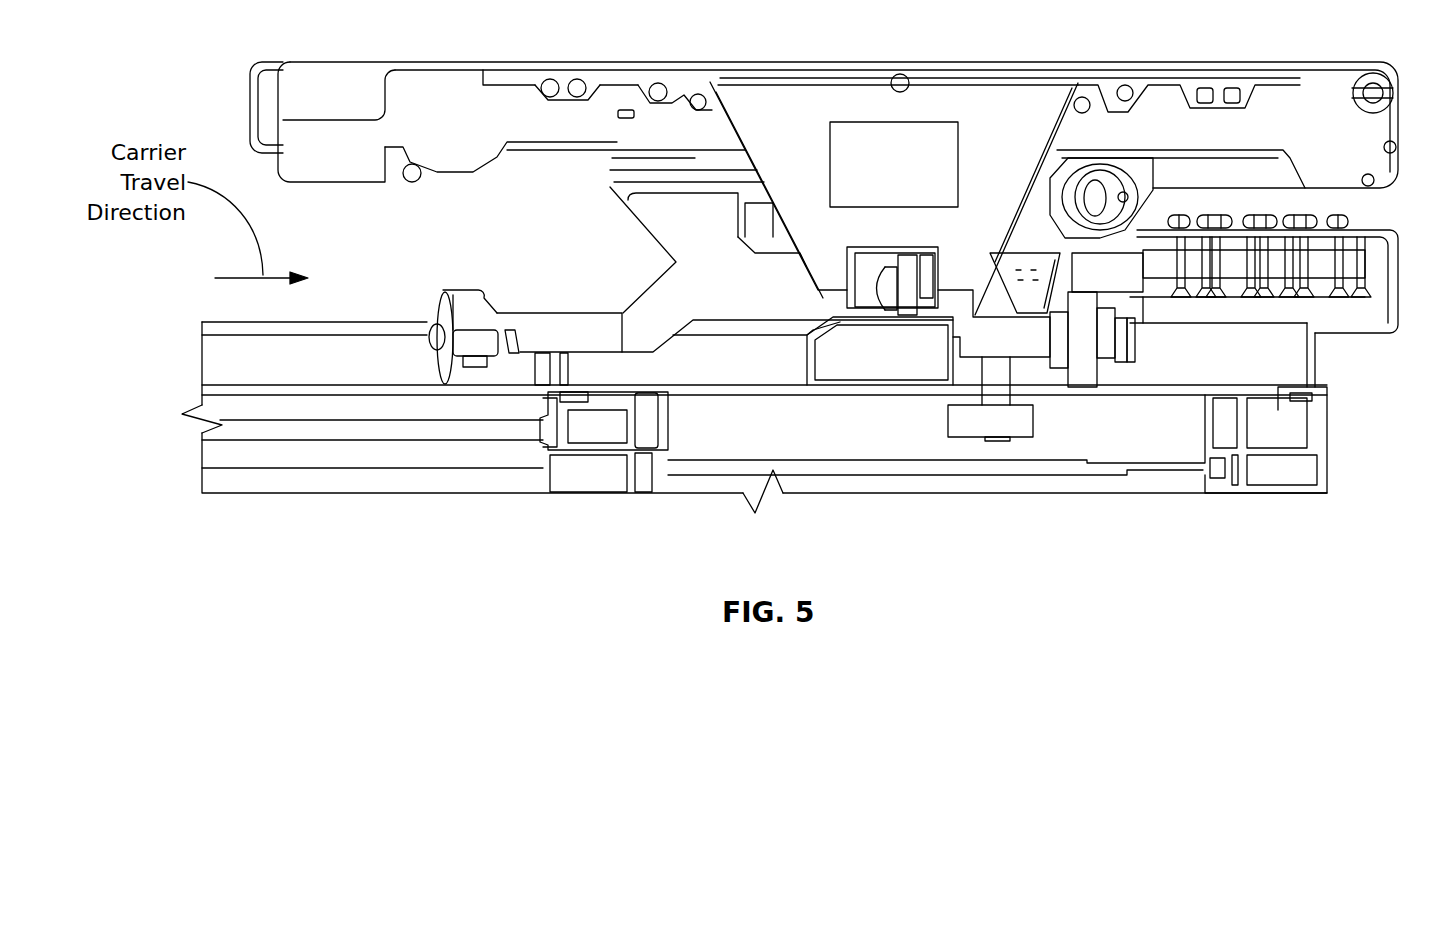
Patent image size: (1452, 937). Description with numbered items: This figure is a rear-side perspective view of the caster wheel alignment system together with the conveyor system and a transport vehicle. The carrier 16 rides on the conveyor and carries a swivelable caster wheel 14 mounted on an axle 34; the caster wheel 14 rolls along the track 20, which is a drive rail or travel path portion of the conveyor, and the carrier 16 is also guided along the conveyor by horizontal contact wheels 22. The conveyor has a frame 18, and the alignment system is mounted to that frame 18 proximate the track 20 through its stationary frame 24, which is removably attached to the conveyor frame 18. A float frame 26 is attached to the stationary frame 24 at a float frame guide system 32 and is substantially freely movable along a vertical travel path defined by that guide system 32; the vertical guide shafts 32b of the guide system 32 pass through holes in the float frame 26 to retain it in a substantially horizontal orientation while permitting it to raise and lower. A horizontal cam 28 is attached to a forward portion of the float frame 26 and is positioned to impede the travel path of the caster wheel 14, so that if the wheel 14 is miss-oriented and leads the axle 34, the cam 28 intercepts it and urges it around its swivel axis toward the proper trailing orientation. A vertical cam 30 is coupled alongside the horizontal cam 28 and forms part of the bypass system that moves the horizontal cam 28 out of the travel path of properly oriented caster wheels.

The caster wheel 14 is at (475, 293).
The carrier 16 is at (1270, 76).
The frame 18 is at (450, 477).
The track 20 is at (324, 383).
The horizontal contact wheel 22 is at (1035, 410).
The stationary frame 24 is at (1387, 308).
The float frame 26 is at (1372, 250).
The horizontal cam 28 is at (1122, 288).
The vertical cam 30 is at (1022, 253).
The float frame guide system 32 is at (1372, 210).
The vertical guide shafts 32b is at (1258, 291).
The axle 34 is at (565, 312).